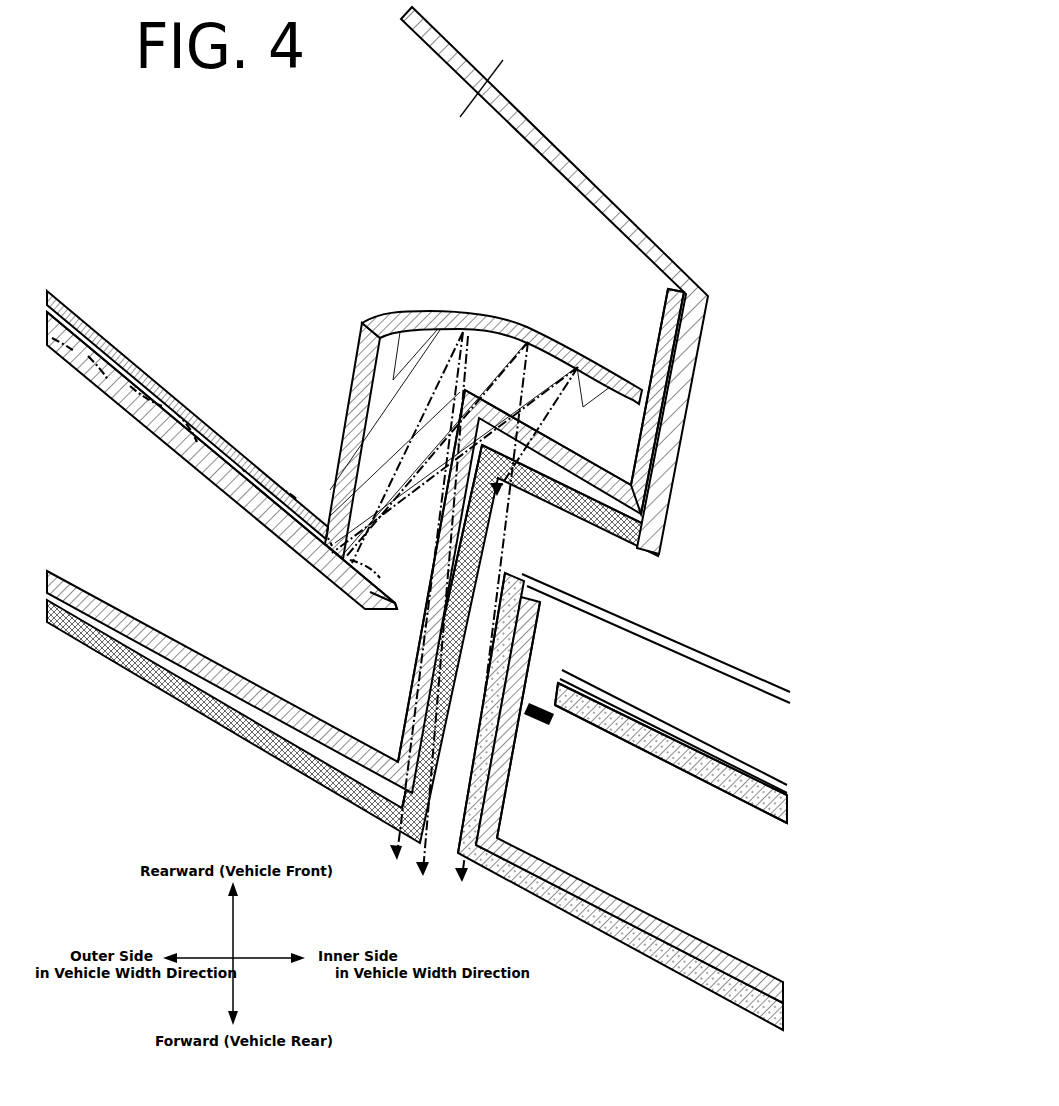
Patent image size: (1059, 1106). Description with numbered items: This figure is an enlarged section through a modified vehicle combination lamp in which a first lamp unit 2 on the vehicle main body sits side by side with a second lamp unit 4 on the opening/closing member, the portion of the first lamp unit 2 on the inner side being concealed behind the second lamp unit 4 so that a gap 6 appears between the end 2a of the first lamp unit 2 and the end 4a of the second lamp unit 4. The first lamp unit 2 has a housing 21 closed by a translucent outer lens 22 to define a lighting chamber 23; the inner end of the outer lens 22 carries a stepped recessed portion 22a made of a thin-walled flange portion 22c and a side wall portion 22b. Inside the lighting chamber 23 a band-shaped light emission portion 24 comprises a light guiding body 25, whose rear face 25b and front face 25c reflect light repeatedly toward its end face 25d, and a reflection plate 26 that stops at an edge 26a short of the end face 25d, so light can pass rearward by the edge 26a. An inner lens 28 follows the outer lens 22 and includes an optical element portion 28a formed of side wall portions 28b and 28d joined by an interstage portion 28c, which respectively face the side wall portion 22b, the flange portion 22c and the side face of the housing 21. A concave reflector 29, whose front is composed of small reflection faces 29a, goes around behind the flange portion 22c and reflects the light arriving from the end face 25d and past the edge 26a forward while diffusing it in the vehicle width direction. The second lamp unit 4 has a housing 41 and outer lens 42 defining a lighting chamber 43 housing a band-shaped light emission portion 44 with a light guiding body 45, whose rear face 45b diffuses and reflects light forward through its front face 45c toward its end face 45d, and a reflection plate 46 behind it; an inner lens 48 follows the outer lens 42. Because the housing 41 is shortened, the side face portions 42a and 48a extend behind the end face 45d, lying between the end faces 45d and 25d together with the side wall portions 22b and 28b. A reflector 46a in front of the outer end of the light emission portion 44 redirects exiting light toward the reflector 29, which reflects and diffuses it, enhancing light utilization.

The first lamp unit 2 is at (554, 277).
The end of the first lamp unit 2a is at (400, 862).
The second lamp unit 4 is at (757, 590).
The end of the second lamp unit 4a is at (461, 885).
The gap 6 is at (422, 880).
The housing 21 is at (517, 110).
The outer lens 22 is at (180, 700).
The stepped recessed portion 22a is at (618, 583).
The side wall portion 22b is at (418, 697).
The flange portion 22c is at (580, 520).
The lighting chamber 23 is at (493, 74).
The band-shaped light emission portion 24 is at (236, 508).
The light guiding body 25 is at (170, 443).
The rear face 25b is at (130, 372).
The front face 25c is at (112, 400).
The end face 25d is at (383, 614).
The reflection plate 26 is at (67, 318).
The edge of the reflection plate 26a is at (321, 522).
The inner lens 28 is at (112, 612).
The optical element portion 28a is at (477, 388).
The side wall portion 28b is at (420, 680).
The interstage portion 28c is at (587, 473).
The side wall portion 28d is at (658, 318).
The reflector 29 is at (530, 335).
The small reflection faces 29a is at (397, 345).
The housing 41 is at (720, 662).
The outer lens 42 is at (700, 987).
The side face portion 42a is at (480, 767).
The lighting chamber 43 is at (747, 707).
The band-shaped light emission portion 44 is at (681, 781).
The light guiding body 45 is at (723, 800).
The rear face 45b is at (642, 712).
The front face 45c is at (600, 733).
The end face 45d is at (556, 692).
The reflection plate 46 is at (757, 768).
The reflector 46a is at (537, 730).
The inner lens 48 is at (673, 927).
The side face portion 48a is at (533, 640).